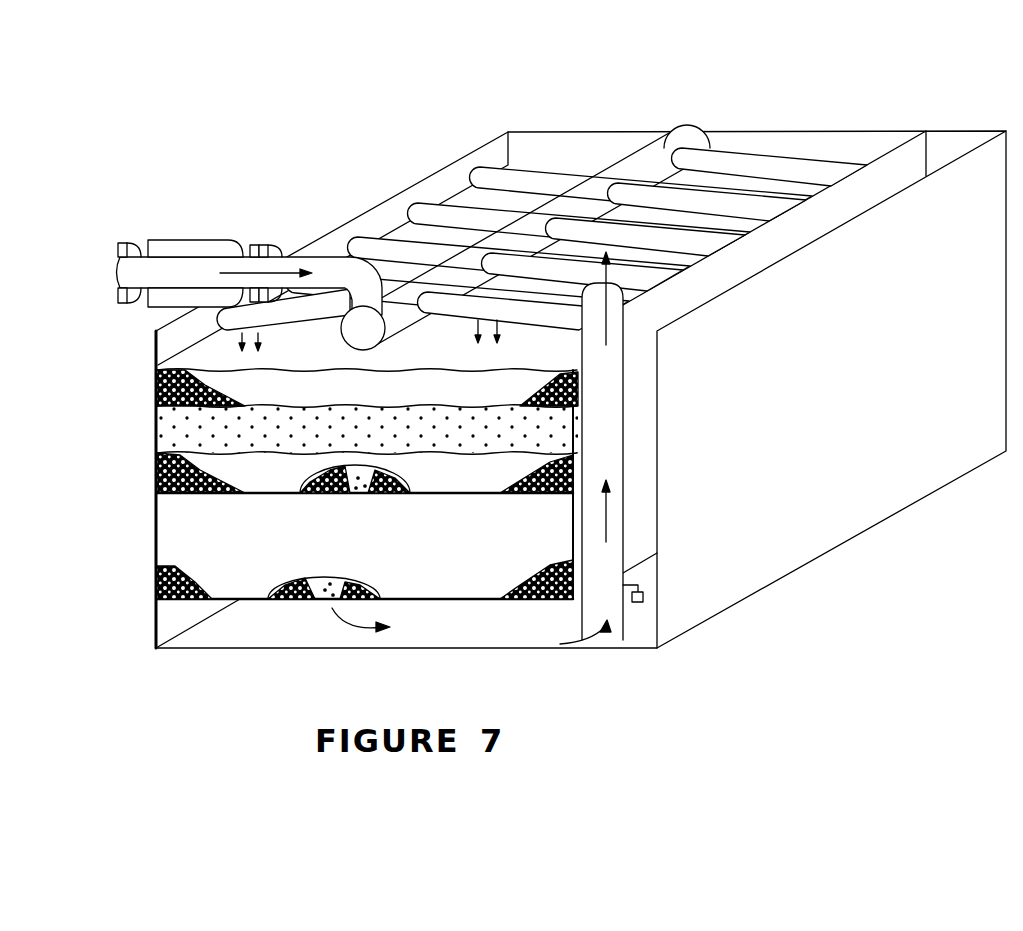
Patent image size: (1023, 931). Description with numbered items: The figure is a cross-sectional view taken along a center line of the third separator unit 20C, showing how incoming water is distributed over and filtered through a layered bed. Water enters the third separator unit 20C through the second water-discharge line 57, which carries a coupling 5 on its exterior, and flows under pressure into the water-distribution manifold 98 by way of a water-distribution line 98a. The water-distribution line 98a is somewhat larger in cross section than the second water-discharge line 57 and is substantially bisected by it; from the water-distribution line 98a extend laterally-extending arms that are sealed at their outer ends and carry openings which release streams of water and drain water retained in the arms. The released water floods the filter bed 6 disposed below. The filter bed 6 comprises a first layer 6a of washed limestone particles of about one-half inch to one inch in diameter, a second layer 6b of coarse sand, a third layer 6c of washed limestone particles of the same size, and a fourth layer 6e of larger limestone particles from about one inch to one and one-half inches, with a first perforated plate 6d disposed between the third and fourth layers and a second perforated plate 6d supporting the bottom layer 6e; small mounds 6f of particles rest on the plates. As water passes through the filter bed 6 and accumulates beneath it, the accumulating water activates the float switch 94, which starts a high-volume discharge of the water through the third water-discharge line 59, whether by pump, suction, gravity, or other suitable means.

The pipe coupling collar 5 is at (190, 240).
The second water-discharge line 57 is at (308, 257).
The water-distribution manifold 98 is at (591, 205).
The water-distribution line 98a is at (690, 132).
The third water-discharge line 59 is at (612, 430).
The float switch 94 is at (643, 597).
The filter bed 6 is at (146, 525).
The first layer 6a is at (232, 400).
The second layer 6b is at (232, 446).
The third layer 6c is at (365, 473).
The perforated plate 6d is at (418, 492).
The fourth layer 6e is at (230, 561).
The gravel mound 6f is at (365, 480).
The third separator unit 20C is at (203, 693).